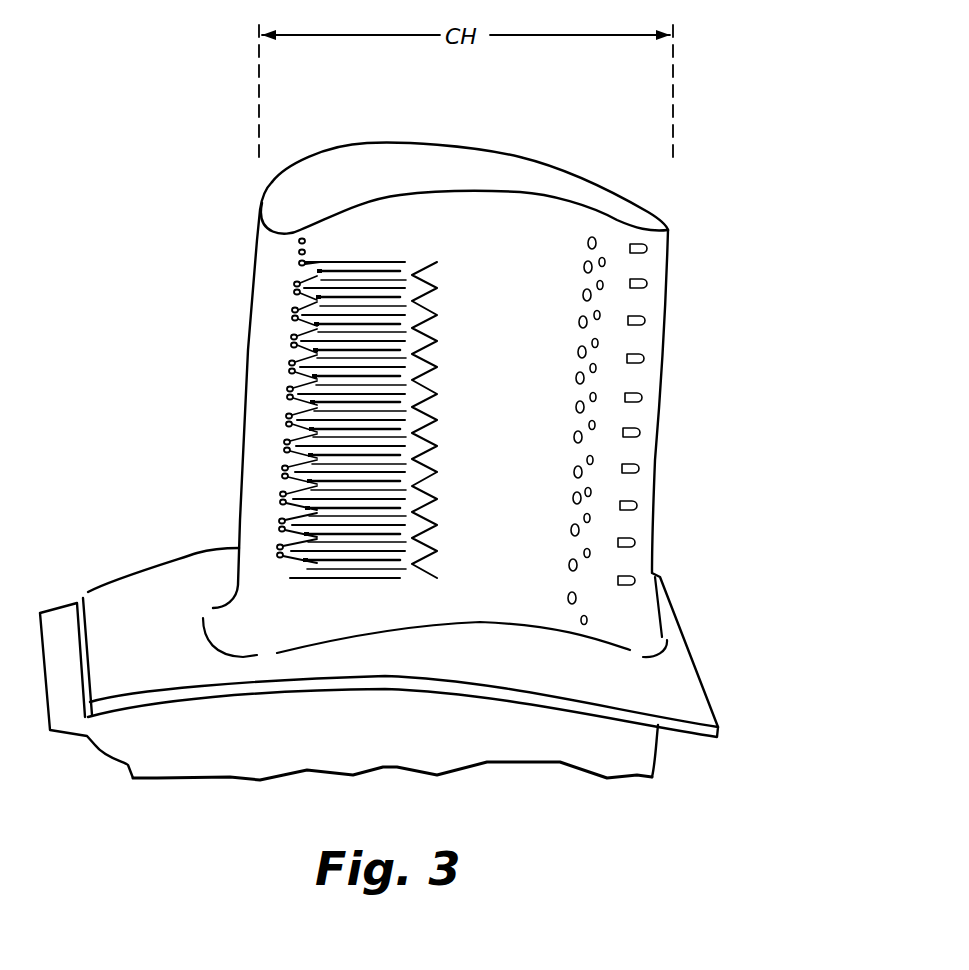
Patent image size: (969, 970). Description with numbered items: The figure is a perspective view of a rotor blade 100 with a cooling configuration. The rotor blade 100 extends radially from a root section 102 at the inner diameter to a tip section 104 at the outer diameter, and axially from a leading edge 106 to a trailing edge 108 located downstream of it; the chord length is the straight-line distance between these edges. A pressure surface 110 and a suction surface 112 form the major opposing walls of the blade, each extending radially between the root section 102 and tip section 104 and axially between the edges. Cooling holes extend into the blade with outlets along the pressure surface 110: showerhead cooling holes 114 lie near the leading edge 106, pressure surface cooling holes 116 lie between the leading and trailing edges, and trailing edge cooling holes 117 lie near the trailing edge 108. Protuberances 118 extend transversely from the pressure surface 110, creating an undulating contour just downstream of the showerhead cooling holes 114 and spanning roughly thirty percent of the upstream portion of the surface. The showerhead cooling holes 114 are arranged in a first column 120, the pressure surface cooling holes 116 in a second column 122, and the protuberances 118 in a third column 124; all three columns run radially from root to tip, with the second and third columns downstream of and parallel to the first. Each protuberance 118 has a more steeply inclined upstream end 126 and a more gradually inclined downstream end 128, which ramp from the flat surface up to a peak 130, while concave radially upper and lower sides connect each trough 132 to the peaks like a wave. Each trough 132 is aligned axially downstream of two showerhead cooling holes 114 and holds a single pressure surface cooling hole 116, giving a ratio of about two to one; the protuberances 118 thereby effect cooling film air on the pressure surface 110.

The rotor blade 100 is at (734, 148).
The root section 102 is at (610, 605).
The tip section 104 is at (280, 200).
The leading edge 106 is at (250, 520).
The trailing edge 108 is at (650, 418).
The pressure surface 110 is at (473, 546).
The suction surface 112 is at (484, 132).
The showerhead cooling holes 114 is at (290, 318).
The pressure surface cooling holes 116 is at (317, 340).
The trailing edge cooling holes 117 is at (650, 320).
The protuberances 118 is at (418, 320).
The first column 120 is at (284, 564).
The second column 122 is at (308, 566).
The third column 124 is at (347, 565).
The upstream end 126 is at (292, 434).
The downstream end 128 is at (415, 433).
The peak 130 is at (385, 404).
The trough 132 is at (430, 446).